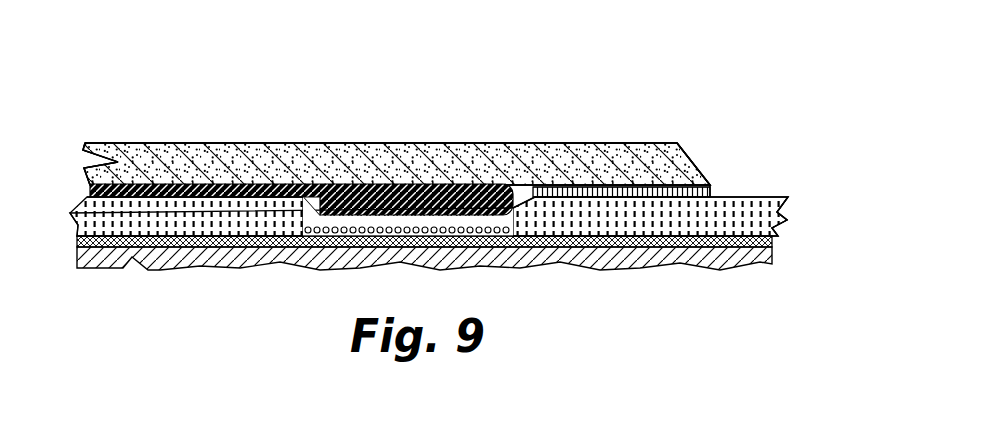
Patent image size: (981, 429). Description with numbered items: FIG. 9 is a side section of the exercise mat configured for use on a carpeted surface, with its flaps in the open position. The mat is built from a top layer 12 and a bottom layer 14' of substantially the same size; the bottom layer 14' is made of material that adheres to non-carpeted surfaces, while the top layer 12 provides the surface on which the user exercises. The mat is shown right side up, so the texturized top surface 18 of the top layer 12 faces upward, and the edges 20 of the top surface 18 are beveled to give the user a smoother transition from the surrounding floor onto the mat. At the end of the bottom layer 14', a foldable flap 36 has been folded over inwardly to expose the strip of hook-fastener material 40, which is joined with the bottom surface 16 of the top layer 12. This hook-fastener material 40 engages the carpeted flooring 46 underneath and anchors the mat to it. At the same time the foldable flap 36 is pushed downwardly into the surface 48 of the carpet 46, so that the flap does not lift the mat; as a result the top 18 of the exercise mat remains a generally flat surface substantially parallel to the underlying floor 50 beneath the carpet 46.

The top layer 12 is at (435, 156).
The bottom surface 16 is at (130, 172).
The top surface 18 is at (272, 150).
The edges 20 is at (693, 157).
The foldable flap 36 is at (490, 213).
The hook-fastener material 40 is at (710, 193).
The bottom layer 14' is at (429, 259).
The surface of the carpet 48 is at (370, 225).
The carpeted flooring 46 is at (768, 204).
The underlying floor 50 is at (620, 247).